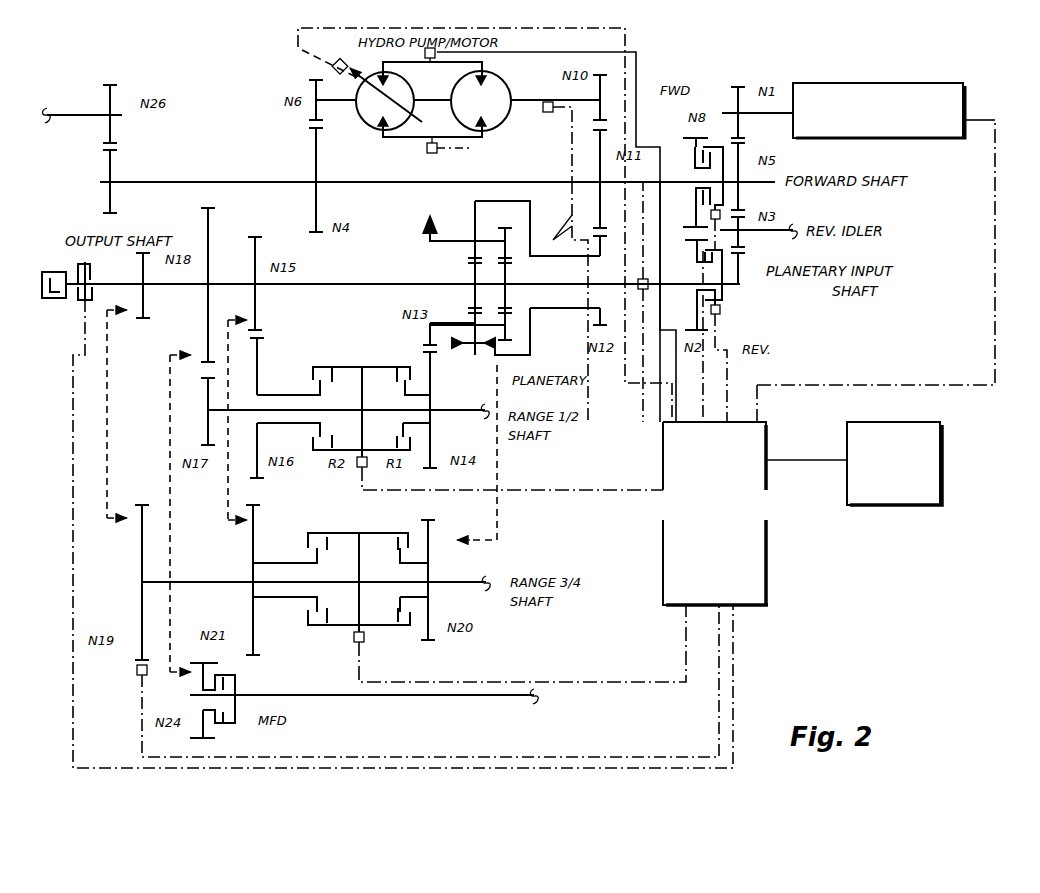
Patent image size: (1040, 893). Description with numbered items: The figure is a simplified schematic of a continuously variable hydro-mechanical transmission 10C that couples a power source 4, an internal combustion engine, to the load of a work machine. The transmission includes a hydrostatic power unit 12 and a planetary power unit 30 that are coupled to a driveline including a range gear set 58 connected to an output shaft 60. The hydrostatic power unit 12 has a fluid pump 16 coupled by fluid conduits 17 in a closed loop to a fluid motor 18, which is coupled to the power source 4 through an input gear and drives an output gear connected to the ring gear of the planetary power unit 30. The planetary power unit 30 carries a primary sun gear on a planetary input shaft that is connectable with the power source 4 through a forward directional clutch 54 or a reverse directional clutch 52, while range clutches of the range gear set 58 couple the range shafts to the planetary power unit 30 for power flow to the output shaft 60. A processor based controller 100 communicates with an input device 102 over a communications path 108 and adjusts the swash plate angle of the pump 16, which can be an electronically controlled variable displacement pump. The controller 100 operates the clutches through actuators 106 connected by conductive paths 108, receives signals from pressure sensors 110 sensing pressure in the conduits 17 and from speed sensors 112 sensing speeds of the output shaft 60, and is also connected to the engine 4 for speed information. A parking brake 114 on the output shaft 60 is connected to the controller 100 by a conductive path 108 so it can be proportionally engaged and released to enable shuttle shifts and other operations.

The power source 4 is at (965, 102).
The continuously variable hydro-mechanical transmission 10C is at (782, 52).
The hydrostatic power unit 12 is at (297, 54).
The fluid pump 16 is at (372, 124).
The fluid conduits 17 is at (482, 62).
The fluid motor 18 is at (494, 88).
The planetary power unit 30 is at (382, 299).
The reverse directional clutch 52 is at (726, 302).
The forward directional clutch 54 is at (714, 145).
The range gear set 58 is at (538, 514).
The output shaft 60 is at (172, 290).
The controller 100 is at (768, 560).
The input device 102 is at (944, 486).
The actuators 106 is at (330, 67).
The conductive paths 108 is at (640, 52).
The pressure sensors 110 is at (400, 166).
The speed sensors 112 is at (546, 109).
The parking brake 114 is at (92, 268).